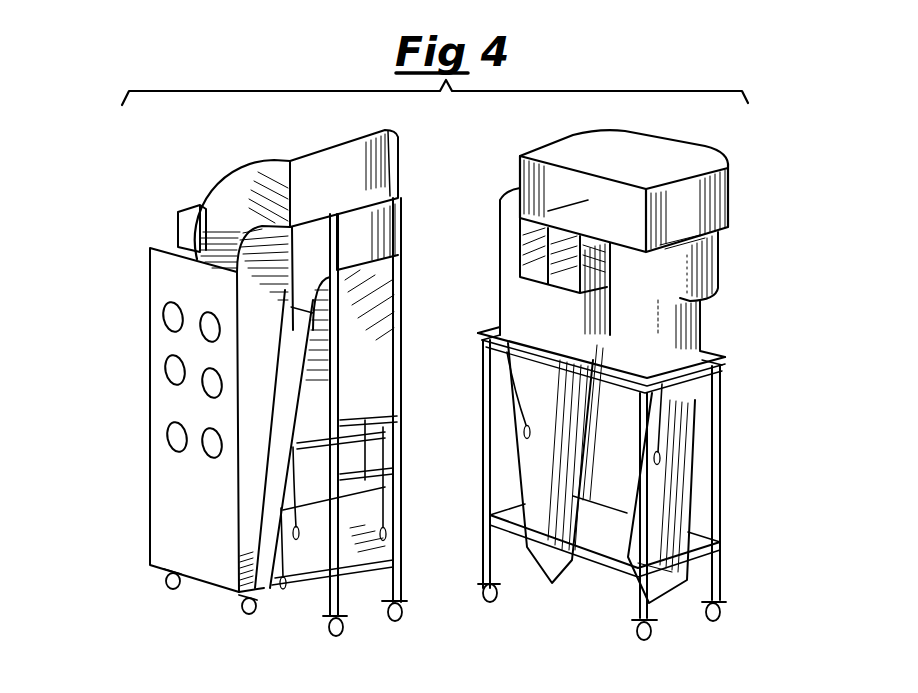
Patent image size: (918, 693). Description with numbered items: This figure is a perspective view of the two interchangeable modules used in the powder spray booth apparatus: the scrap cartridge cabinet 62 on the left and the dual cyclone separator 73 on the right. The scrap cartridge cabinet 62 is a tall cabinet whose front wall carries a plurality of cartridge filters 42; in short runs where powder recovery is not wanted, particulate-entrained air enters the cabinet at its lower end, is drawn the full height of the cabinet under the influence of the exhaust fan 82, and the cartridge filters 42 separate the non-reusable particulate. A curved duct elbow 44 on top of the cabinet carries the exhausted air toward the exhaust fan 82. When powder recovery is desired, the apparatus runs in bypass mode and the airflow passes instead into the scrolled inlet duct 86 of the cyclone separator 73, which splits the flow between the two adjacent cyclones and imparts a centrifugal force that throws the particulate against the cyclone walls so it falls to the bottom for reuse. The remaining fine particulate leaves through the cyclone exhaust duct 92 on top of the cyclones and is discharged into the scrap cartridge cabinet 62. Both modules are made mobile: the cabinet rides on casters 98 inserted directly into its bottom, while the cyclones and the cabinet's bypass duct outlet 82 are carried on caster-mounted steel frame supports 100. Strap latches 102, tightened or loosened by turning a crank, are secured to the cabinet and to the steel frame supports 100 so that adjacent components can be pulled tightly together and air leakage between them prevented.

The cartridge filters 42 is at (205, 446).
The duct elbow 44 is at (225, 195).
The scrap cartridge cabinet 62 is at (164, 201).
The cyclone separator 73 is at (730, 261).
The exhaust fan 82 is at (372, 236).
The inlet duct 86 is at (557, 263).
The cyclone exhaust duct 92 is at (690, 197).
The casters 98 is at (394, 621).
The steel frame supports 100 is at (722, 505).
The strap latches 102 is at (283, 563).